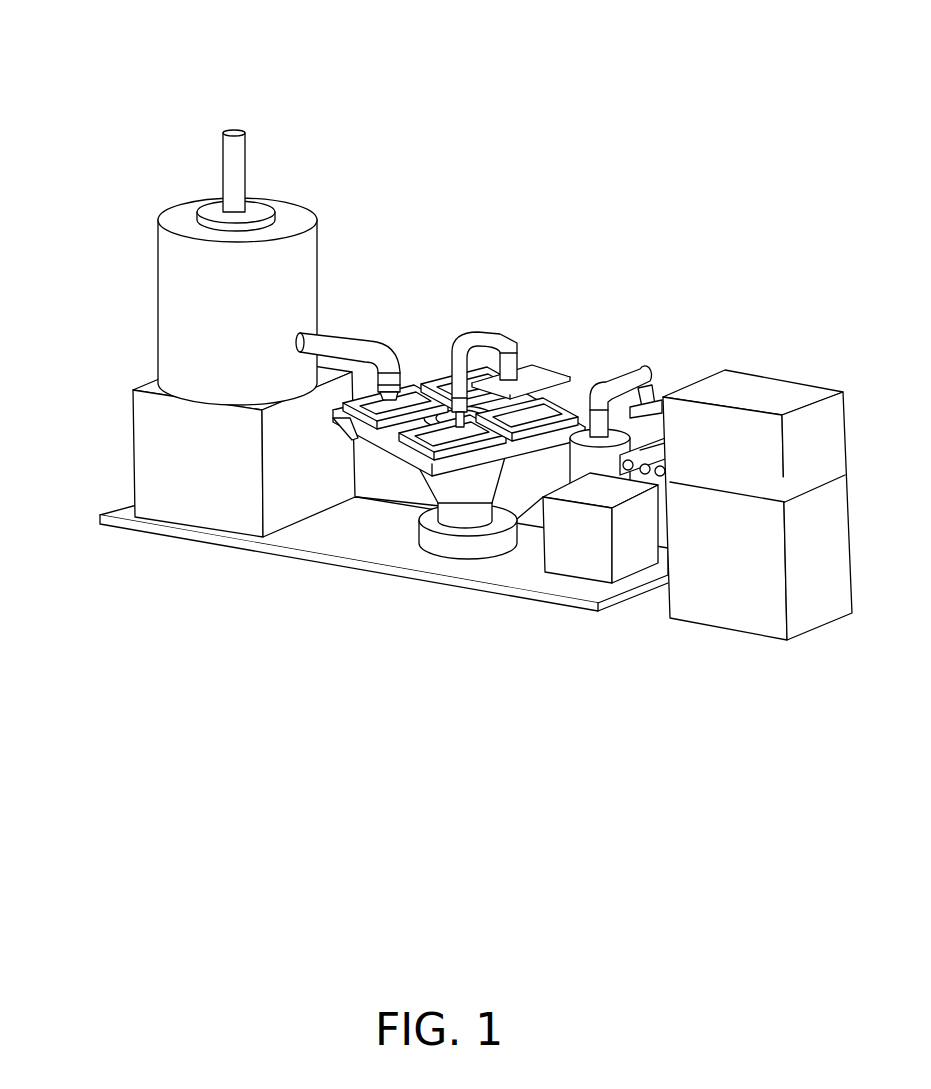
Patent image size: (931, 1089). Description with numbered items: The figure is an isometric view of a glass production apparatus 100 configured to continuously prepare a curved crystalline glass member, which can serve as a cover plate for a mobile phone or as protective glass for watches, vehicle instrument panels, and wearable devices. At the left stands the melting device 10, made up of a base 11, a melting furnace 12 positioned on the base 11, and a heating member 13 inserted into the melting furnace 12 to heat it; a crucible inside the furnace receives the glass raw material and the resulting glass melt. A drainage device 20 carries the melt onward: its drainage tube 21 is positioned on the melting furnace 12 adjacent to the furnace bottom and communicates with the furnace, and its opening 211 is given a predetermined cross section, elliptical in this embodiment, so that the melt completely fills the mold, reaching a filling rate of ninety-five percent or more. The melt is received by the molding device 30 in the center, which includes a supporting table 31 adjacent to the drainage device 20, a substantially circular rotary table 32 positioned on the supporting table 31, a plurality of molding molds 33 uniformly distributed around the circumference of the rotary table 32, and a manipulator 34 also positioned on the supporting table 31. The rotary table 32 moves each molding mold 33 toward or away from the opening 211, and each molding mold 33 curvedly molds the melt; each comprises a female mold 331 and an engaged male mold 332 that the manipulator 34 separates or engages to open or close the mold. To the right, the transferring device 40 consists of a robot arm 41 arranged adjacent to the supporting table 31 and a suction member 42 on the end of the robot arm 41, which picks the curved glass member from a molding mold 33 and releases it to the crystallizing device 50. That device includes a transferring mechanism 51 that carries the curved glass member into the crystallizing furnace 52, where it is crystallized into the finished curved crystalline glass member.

The glass production apparatus 100 is at (448, 374).
The melting device 10 is at (200, 333).
The base 11 is at (158, 417).
The melting furnace 12 is at (185, 275).
The heating member 13 is at (186, 171).
The drainage device 20 is at (406, 328).
The drainage tube 21 is at (343, 348).
The opening 211 is at (460, 412).
The molding device 30 is at (394, 545).
The supporting table 31 is at (460, 545).
The rotary table 32 is at (473, 453).
The molding mold 33 is at (390, 514).
The female mold 331 is at (345, 438).
The male mold 332 is at (377, 443).
The manipulator 34 is at (413, 450).
The transferring device 40 is at (615, 429).
The robot arm 41 is at (600, 387).
The suction member 42 is at (647, 408).
The crystallizing device 50 is at (736, 469).
The transferring mechanism 51 is at (665, 422).
The crystallizing furnace 52 is at (720, 422).